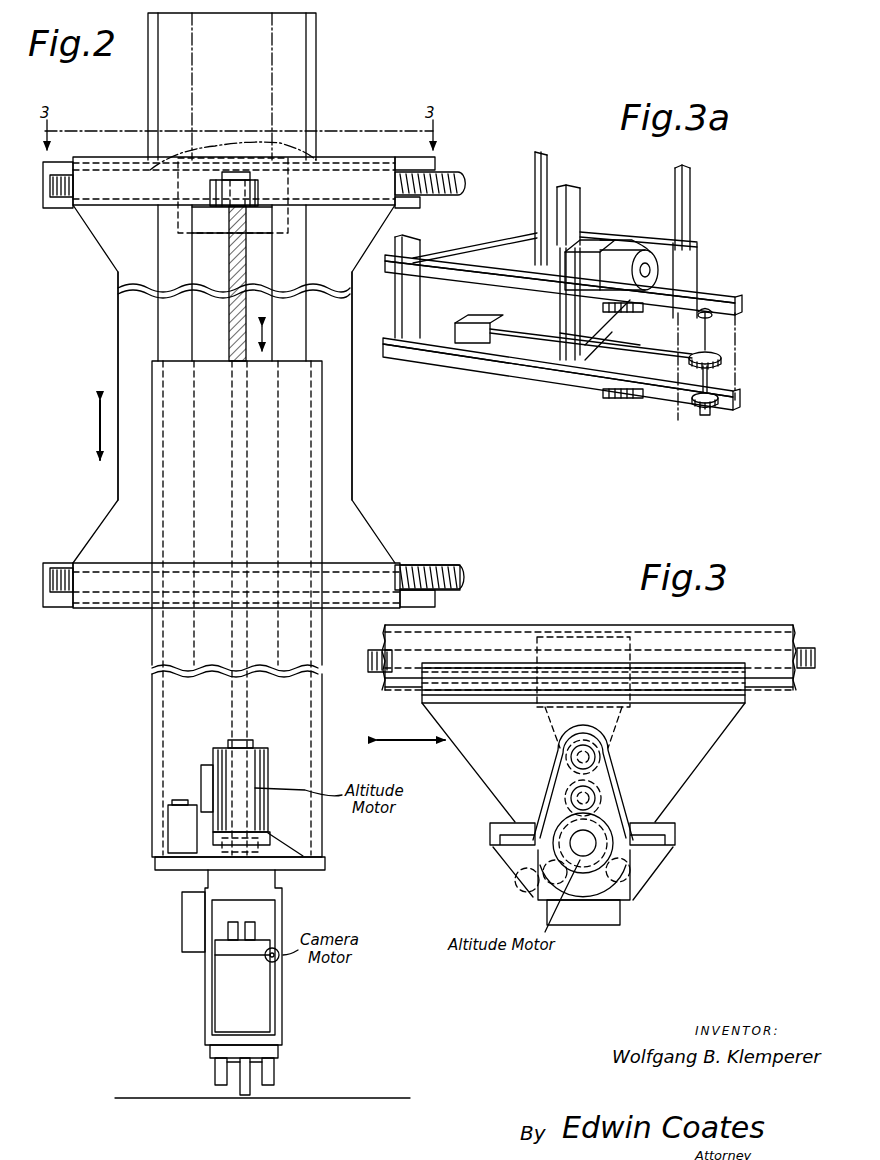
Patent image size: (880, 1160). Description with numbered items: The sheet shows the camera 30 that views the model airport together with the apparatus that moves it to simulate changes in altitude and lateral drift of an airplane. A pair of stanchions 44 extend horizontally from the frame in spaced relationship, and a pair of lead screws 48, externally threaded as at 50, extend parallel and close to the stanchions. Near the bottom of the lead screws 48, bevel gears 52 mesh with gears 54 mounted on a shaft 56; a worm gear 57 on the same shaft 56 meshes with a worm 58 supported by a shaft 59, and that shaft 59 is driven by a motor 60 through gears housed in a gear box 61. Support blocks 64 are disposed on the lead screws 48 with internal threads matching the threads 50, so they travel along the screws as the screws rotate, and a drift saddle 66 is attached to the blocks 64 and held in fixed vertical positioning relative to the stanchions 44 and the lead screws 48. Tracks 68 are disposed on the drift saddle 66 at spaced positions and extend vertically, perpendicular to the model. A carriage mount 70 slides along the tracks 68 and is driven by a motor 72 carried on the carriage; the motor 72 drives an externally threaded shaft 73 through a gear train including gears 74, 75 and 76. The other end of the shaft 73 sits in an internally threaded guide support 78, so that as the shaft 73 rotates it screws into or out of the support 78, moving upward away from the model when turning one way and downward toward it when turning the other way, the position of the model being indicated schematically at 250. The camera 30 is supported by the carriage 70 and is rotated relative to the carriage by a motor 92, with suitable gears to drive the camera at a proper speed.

In FIG. 2, the camera 30 is at (226, 990).
In FIG. 3A, the stanchions 44 is at (690, 297).
In FIG. 3, the stanchions 44 is at (637, 625).
In FIG. 2, the lead screws 48 is at (467, 184).
In FIG. 3A, the lead screws 48 is at (543, 297).
In FIG. 2, the threads 50 is at (447, 196).
In FIG. 3A, the threads 50 is at (623, 313).
In FIG. 3, the threads 50 is at (385, 676).
In FIG. 3A, the bevel gears 52 is at (704, 414).
In FIG. 3A, the gears 54 is at (720, 401).
In FIG. 3A, the shaft 56 is at (710, 380).
In FIG. 3A, the worm gear 57 is at (715, 345).
In FIG. 3A, the worm 58 is at (721, 362).
In FIG. 3A, the shaft 59 is at (636, 349).
In FIG. 3A, the motor 60 is at (665, 243).
In FIG. 3A, the gear box 61 is at (462, 334).
In FIG. 3, the support blocks 64 is at (540, 650).
In FIG. 2, the drift saddle 66 is at (100, 252).
In FIG. 3, the drift saddle 66 is at (718, 750).
In FIG. 2, the tracks 68 is at (166, 336).
In FIG. 3, the tracks 68 is at (500, 826).
In FIG. 2, the carriage mount 70 is at (160, 449).
In FIG. 3, the carriage mount 70 is at (505, 850).
In FIG. 2, the motor 72 is at (218, 748).
In FIG. 3, the motor 72 is at (600, 893).
In FIG. 2, the externally threaded shaft 73 is at (233, 336).
In FIG. 3, the externally threaded shaft 73 is at (618, 745).
In FIG. 3, the gear 74 is at (610, 820).
In FIG. 3, the gear 75 is at (560, 802).
In FIG. 3, the gear 76 is at (565, 757).
In FIG. 2, the guide support 78 is at (205, 210).
In FIG. 2, the motor 92 is at (280, 962).
In FIG. 2, the model position 250 is at (342, 1098).